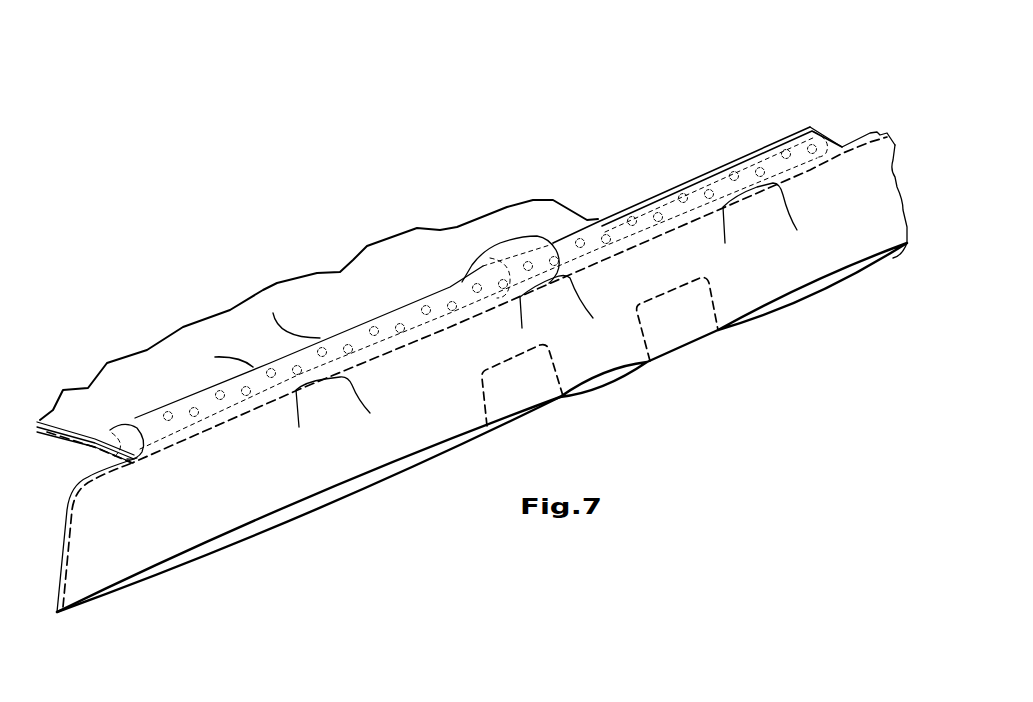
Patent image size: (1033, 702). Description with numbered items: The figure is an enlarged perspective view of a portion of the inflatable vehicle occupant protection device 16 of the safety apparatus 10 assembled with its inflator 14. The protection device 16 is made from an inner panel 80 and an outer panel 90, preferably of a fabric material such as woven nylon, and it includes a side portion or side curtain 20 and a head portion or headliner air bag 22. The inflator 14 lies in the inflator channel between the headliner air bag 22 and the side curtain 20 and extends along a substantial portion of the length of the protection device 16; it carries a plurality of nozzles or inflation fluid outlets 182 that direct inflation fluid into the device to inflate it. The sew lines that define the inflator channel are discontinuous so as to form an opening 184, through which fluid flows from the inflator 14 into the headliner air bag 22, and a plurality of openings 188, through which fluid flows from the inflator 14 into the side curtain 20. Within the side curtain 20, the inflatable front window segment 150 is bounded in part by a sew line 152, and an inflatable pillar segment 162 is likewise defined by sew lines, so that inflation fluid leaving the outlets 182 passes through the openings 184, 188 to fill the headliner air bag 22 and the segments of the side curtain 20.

The safety apparatus 10 is at (862, 80).
The inflator 14 is at (146, 406).
The inflatable vehicle occupant protection device 16 is at (750, 462).
The side curtain 20 is at (754, 382).
The headliner air bag 22 is at (176, 310).
The inner panel 80 is at (223, 576).
The outer panel 90 is at (263, 540).
The inflatable front window segment 150 is at (343, 492).
The sew line 152 is at (830, 283).
The inflatable pillar segment 162 is at (597, 382).
The inflation fluid outlets 182 is at (603, 240).
The opening 184 is at (267, 352).
The openings 188 is at (332, 378).